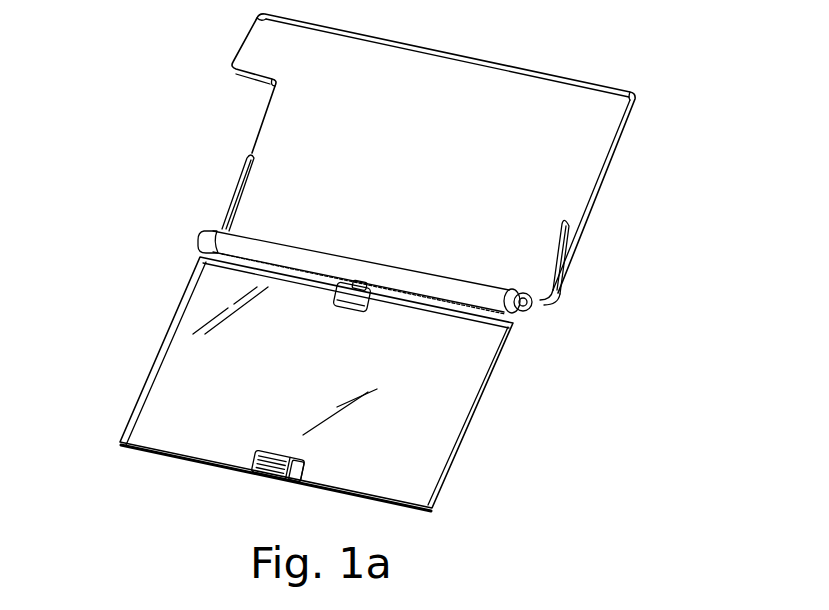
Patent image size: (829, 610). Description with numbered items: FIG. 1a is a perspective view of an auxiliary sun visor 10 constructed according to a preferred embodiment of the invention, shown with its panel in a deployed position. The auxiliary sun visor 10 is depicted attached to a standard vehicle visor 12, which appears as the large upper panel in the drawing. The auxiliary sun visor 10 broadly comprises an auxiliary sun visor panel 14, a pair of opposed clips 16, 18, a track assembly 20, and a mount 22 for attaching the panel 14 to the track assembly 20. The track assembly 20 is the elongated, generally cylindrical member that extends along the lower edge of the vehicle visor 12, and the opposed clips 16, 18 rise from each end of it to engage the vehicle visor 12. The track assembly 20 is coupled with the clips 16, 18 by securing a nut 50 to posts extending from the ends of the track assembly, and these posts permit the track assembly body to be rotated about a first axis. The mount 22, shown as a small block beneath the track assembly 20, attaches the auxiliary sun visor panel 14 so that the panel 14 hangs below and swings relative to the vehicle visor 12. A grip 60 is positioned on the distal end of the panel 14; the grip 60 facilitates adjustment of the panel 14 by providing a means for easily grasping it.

The auxiliary sun visor 10 is at (126, 254).
The standard vehicle visor 12 is at (413, 125).
The auxiliary sun visor panel 14 is at (288, 383).
The clip 16 is at (242, 168).
The clip 18 is at (558, 254).
The track assembly 20 is at (418, 270).
The mount 22 is at (349, 290).
The nut 50 is at (529, 309).
The grip 60 is at (257, 472).